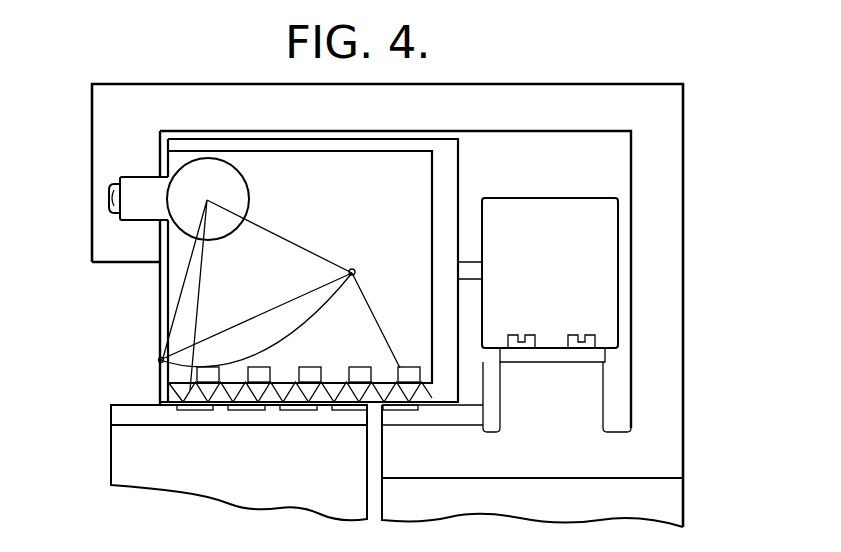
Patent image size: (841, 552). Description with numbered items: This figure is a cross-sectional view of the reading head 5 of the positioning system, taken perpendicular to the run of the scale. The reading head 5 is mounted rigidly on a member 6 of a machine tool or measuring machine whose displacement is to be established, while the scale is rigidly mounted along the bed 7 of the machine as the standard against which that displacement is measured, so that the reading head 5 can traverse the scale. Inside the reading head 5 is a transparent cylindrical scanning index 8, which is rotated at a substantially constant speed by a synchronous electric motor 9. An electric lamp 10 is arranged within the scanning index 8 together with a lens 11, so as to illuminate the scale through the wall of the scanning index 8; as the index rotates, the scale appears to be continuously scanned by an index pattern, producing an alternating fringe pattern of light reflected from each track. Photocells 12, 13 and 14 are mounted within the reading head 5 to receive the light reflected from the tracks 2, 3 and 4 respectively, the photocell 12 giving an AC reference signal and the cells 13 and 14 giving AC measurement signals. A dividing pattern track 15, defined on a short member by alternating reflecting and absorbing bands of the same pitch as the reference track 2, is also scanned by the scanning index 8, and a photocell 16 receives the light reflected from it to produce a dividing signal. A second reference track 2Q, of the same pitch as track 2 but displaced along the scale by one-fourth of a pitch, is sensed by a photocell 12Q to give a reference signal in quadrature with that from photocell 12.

The reference track 2 is at (293, 412).
The second reference track 2Q is at (345, 412).
The track 3 is at (247, 412).
The track 4 is at (193, 412).
The reading head 5 is at (652, 287).
The member 6 is at (633, 510).
The bed 7 is at (130, 460).
The scanning index 8 is at (343, 145).
The synchronous electric motor 9 is at (600, 233).
The electric lamp 10 is at (238, 190).
The lens 11 is at (318, 297).
The photocell 12 is at (313, 365).
The photocell 12Q is at (358, 367).
The photocell 13 is at (257, 365).
The photocell 14 is at (207, 367).
The dividing pattern track 15 is at (397, 410).
The photocell 16 is at (410, 367).